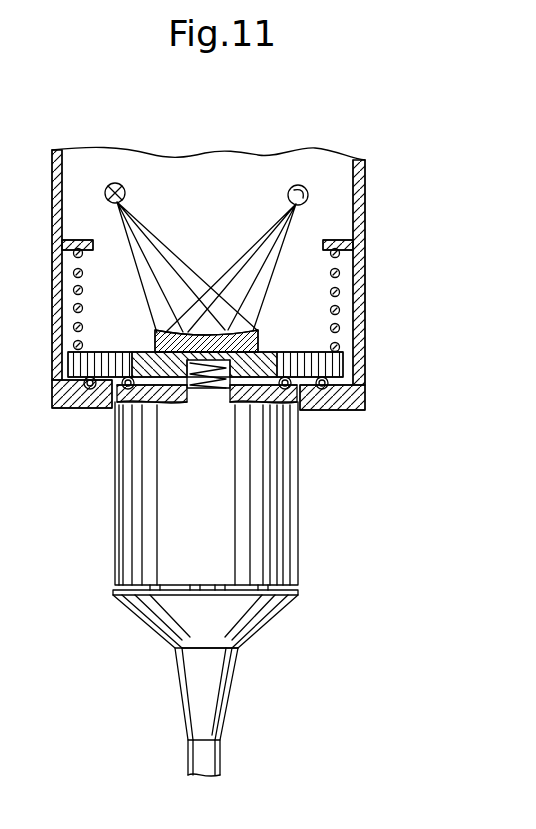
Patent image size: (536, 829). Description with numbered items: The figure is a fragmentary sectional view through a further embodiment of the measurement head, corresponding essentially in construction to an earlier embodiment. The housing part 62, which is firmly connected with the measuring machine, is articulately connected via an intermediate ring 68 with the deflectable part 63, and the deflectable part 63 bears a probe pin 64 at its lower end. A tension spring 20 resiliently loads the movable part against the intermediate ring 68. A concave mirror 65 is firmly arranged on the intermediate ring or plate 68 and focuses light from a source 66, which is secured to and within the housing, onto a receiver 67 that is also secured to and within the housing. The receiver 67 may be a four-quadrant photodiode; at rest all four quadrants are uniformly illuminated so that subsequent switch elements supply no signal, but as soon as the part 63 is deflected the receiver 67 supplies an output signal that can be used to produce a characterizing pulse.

The tension spring 20 is at (218, 400).
The housing part 62 is at (365, 290).
The deflectable part 63 is at (273, 522).
The probe pin 64 is at (215, 755).
The concave mirror 65 is at (258, 335).
The light source 66 is at (118, 182).
The receiver 67 is at (300, 185).
The intermediate ring 68 is at (343, 360).